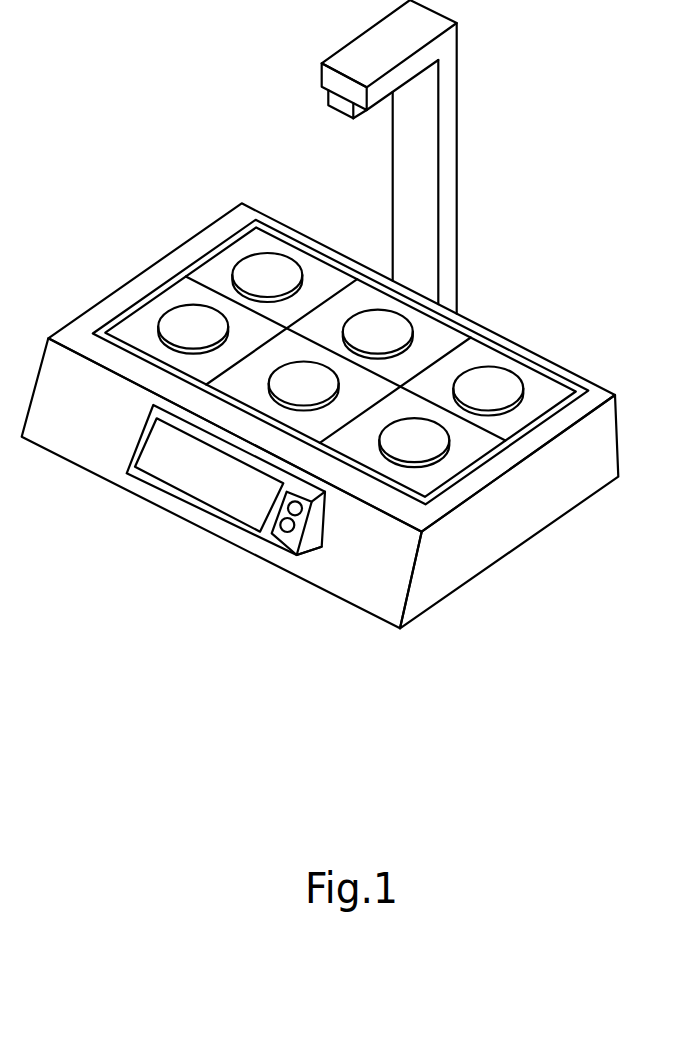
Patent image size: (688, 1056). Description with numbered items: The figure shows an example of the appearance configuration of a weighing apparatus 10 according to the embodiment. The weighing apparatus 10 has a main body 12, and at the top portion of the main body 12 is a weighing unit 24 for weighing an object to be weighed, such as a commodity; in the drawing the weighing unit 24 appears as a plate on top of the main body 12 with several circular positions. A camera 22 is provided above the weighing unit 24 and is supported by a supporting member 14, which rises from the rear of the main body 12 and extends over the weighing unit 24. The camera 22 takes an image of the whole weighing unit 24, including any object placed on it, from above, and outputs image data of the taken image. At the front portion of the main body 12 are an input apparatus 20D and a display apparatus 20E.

The weighing apparatus 10 is at (320, 321).
The main body 12 is at (492, 550).
The supporting member 14 is at (458, 49).
The camera 22 is at (328, 103).
The weighing unit 24 is at (565, 412).
The display apparatus 20E is at (190, 485).
The input apparatus 20D is at (282, 535).